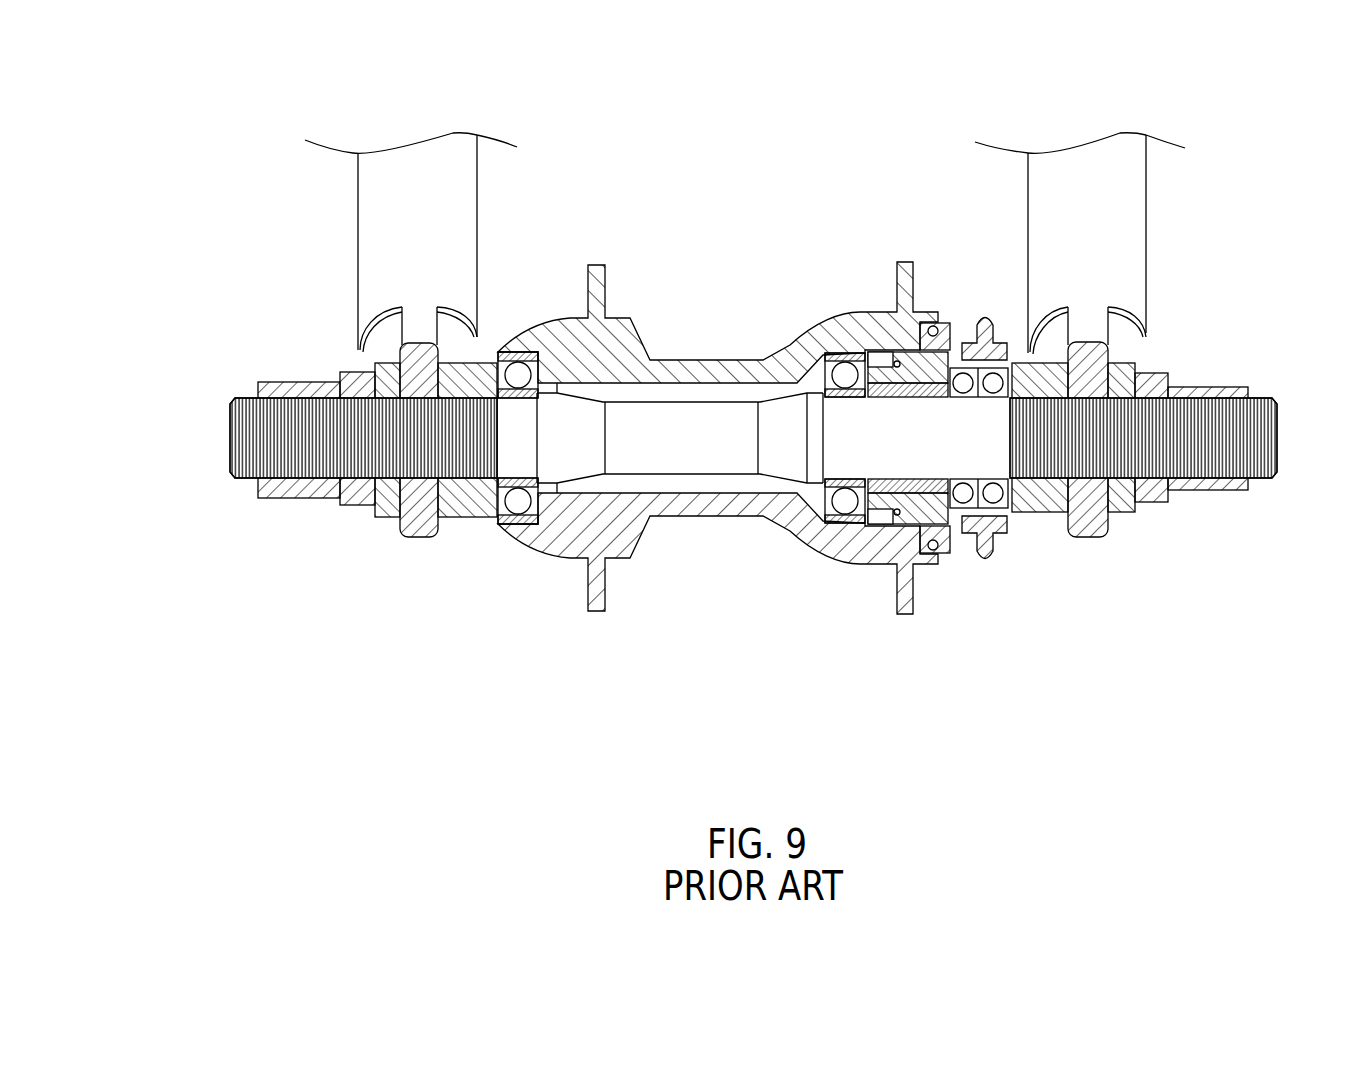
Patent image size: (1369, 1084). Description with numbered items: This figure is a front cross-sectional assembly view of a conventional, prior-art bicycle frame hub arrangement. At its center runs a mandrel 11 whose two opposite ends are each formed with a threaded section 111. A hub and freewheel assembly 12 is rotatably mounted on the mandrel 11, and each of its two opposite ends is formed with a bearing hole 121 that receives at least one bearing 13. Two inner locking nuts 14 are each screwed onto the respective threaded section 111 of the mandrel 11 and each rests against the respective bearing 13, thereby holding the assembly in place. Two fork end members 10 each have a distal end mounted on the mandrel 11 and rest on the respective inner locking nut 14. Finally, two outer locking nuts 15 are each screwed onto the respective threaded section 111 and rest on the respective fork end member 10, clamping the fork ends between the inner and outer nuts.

The fork end member 10 is at (350, 239).
The mandrel 11 is at (685, 566).
The threaded section 111 is at (307, 443).
The hub and freewheel assembly 12 is at (726, 347).
The bearing hole 121 is at (521, 350).
The bearing 13 is at (517, 515).
The inner locking nut 14 is at (473, 528).
The outer locking nut 15 is at (322, 509).